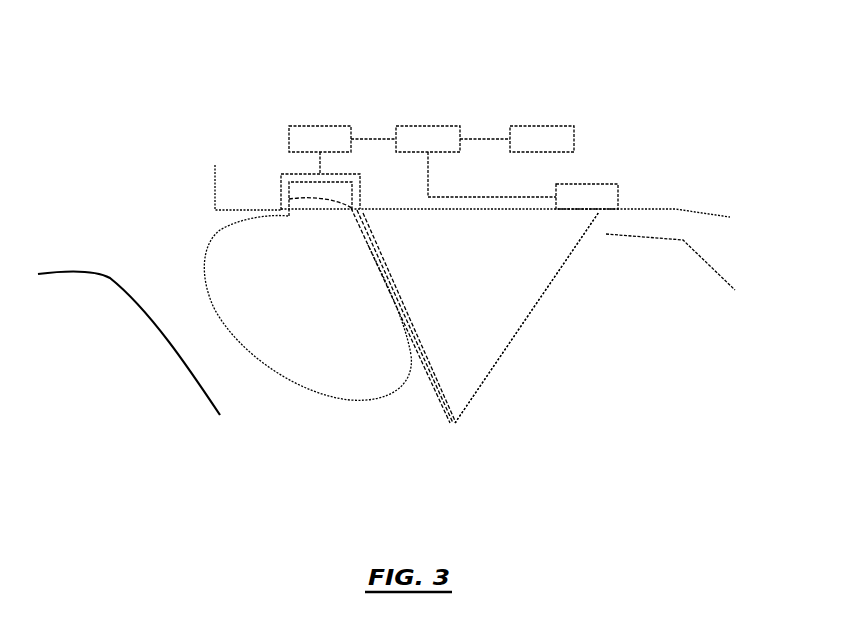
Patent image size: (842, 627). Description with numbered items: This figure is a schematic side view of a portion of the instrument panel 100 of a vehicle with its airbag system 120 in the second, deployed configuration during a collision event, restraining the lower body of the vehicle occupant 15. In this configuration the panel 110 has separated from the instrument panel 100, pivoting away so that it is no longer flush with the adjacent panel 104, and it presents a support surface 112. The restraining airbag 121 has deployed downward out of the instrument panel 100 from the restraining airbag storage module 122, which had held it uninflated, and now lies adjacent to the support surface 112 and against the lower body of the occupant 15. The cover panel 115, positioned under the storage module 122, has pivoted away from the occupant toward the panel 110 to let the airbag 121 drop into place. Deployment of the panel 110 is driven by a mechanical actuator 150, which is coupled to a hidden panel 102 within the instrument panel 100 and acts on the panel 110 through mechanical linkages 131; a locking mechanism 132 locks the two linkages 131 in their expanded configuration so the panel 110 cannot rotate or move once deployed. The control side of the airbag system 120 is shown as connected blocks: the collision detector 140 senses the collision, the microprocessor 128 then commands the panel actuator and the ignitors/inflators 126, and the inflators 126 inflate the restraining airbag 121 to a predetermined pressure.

The lower body of the vehicle occupant 15 is at (88, 292).
The instrument panel 100 is at (215, 196).
The hidden panel 102 is at (675, 209).
The adjacent panel 104 is at (640, 237).
The panel 110 is at (442, 397).
The support surface 112 is at (378, 283).
The cover panel 115 is at (368, 244).
The airbag system 120 is at (283, 97).
The restraining airbag 121 is at (220, 247).
The restraining airbag storage module 122 is at (285, 178).
The ignitors/inflators 126 is at (325, 135).
The microprocessor 128 is at (415, 137).
The mechanical linkages 131 is at (500, 360).
The locking mechanism 132 is at (532, 313).
The collision detector 140 is at (545, 142).
The mechanical actuator 150 is at (593, 191).